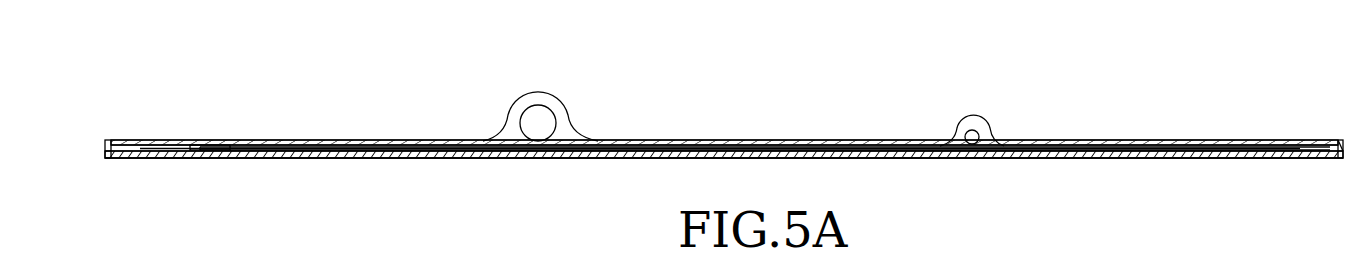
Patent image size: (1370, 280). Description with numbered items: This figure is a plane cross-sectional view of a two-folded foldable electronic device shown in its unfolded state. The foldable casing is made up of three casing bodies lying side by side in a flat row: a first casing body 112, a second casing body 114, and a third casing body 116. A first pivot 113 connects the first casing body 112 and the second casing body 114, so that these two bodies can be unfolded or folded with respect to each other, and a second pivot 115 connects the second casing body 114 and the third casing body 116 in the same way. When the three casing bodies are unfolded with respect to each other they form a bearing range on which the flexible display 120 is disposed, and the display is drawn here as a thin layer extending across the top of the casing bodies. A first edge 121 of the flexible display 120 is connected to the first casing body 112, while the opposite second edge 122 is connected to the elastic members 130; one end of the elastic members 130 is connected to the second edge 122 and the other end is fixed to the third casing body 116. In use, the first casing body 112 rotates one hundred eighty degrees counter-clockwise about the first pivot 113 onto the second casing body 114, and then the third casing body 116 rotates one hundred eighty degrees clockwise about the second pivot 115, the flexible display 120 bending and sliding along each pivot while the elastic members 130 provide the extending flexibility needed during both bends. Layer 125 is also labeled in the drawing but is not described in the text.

The first casing body 112 is at (1160, 158).
The first pivot 113 is at (982, 130).
The second casing body 114 is at (757, 158).
The second pivot 115 is at (543, 112).
The third casing body 116 is at (333, 158).
The flexible display 120 is at (357, 150).
The first edge 121 is at (1262, 146).
The second edge 122 is at (212, 146).
The cover layer 125 is at (418, 145).
The elastic member 130 is at (208, 148).